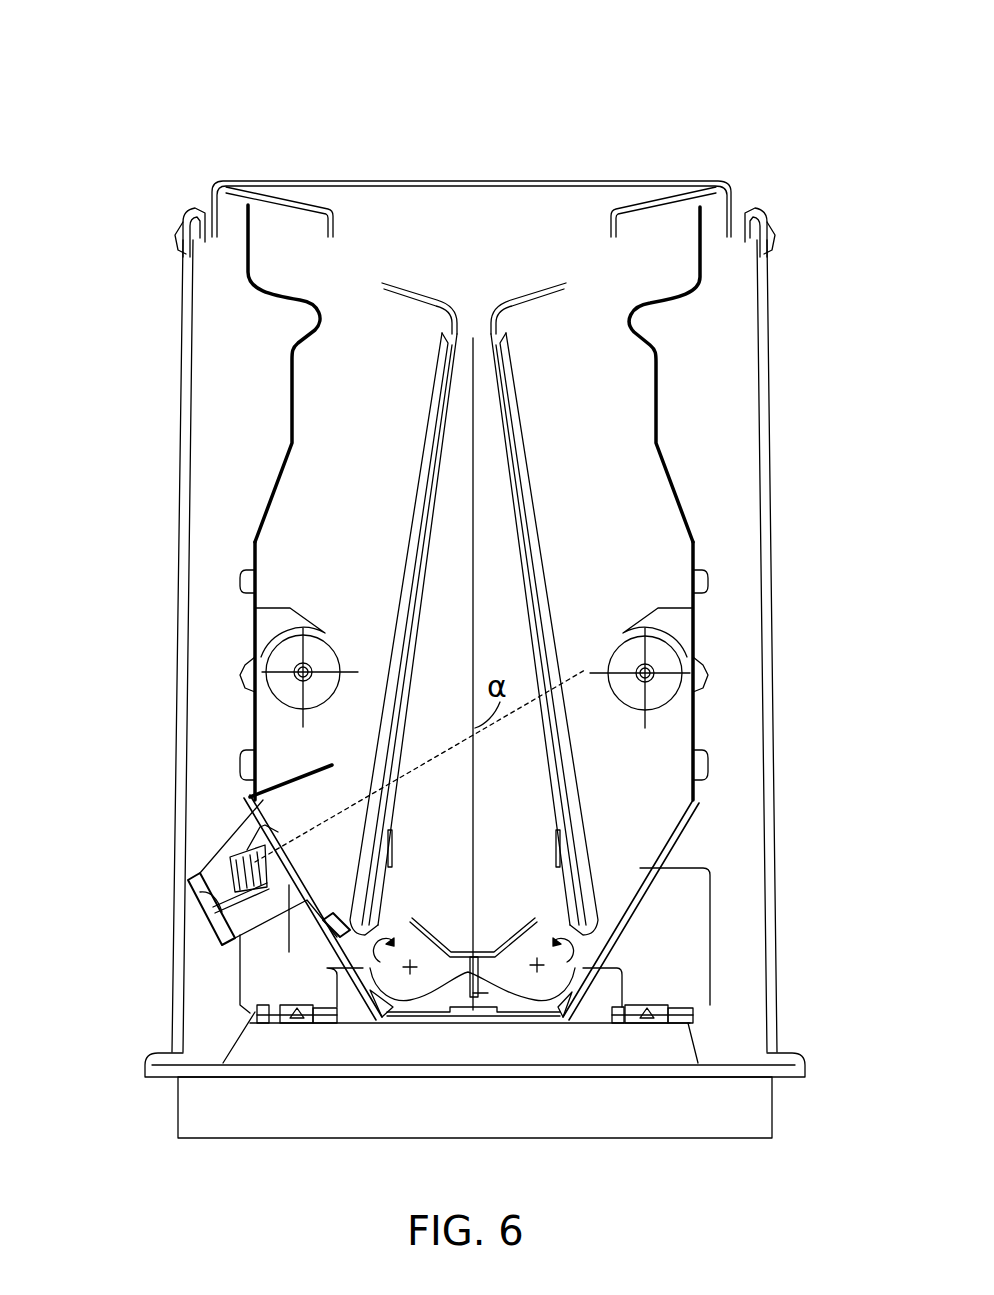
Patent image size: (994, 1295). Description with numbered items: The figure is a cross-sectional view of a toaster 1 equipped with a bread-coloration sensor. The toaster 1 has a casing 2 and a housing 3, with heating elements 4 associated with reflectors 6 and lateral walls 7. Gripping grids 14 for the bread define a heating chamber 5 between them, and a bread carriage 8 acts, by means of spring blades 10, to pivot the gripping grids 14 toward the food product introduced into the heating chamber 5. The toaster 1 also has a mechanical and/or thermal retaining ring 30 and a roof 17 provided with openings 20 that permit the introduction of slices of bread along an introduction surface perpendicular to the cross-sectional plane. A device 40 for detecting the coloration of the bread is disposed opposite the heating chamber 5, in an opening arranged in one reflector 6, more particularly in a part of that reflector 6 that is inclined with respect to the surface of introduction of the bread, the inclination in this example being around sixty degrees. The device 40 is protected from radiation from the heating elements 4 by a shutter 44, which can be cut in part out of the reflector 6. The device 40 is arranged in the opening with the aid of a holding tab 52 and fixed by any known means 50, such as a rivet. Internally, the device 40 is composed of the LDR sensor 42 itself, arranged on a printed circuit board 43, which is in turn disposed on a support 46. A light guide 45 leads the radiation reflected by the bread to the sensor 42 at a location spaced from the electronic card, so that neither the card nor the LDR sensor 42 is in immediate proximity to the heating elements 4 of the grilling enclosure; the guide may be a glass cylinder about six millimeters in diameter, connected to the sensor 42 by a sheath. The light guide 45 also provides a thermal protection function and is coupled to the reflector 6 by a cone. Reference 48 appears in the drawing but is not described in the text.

The toaster 1 is at (194, 146).
The casing 2 is at (157, 493).
The housing 3 is at (240, 1008).
The heating elements 4 is at (287, 657).
The heating chamber 5 is at (458, 821).
The reflectors 6 is at (276, 492).
The lateral walls 7 is at (288, 567).
The bread carriage 8 is at (497, 980).
The spring blades 10 is at (430, 987).
The gripping grids 14 is at (407, 697).
The roof 17 is at (207, 206).
The openings 20 is at (284, 198).
The retaining ring 30 is at (752, 215).
The device for detecting the coloration of the bread 40 is at (212, 832).
The LDR sensor 42 is at (207, 898).
The printed circuit board 43 is at (213, 925).
The shutter 44 is at (294, 779).
The light guide 45 is at (250, 860).
The support 46 is at (273, 933).
The pin 48 is at (289, 890).
The fixing means 50 is at (236, 773).
The holding tab 52 is at (343, 925).